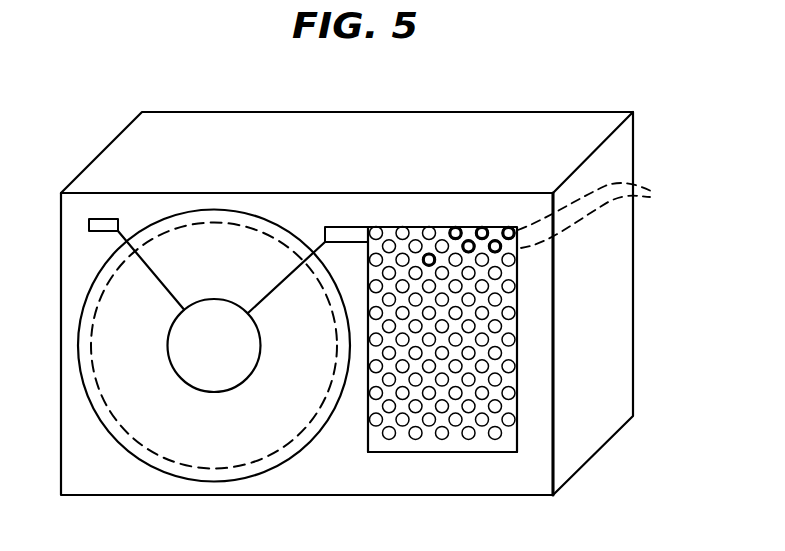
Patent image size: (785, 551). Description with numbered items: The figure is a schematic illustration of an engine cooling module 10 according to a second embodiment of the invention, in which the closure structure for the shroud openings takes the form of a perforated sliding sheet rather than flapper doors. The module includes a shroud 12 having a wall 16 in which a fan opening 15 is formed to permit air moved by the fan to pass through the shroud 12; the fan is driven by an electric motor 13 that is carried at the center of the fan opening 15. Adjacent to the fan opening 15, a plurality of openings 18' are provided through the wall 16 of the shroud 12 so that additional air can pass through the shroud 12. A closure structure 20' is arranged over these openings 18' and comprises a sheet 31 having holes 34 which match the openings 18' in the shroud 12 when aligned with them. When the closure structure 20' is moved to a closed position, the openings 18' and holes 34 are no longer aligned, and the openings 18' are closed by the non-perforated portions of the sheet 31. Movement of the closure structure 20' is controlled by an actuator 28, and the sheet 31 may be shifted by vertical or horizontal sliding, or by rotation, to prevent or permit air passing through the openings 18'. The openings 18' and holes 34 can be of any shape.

The engine cooling module 10 is at (556, 98).
The shroud 12 is at (623, 254).
The electric motor 13 is at (218, 385).
The fan opening 15 is at (102, 422).
The wall 16 is at (336, 473).
The openings 18' is at (601, 214).
The closure structure 20' is at (490, 340).
The actuator 28 is at (345, 229).
The sheet 31 is at (508, 445).
The holes 34 is at (90, 223).